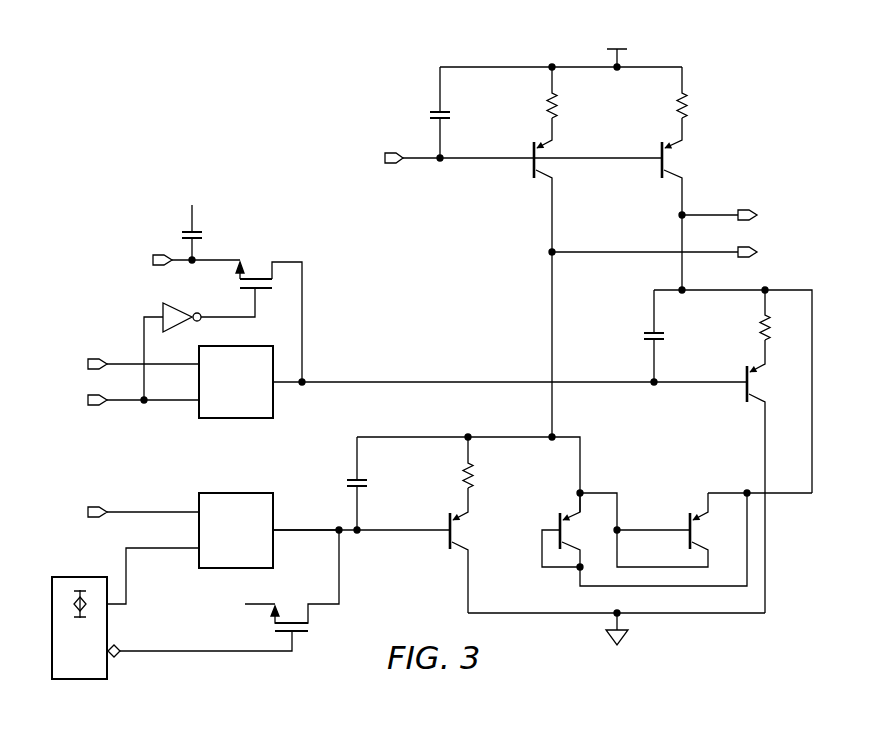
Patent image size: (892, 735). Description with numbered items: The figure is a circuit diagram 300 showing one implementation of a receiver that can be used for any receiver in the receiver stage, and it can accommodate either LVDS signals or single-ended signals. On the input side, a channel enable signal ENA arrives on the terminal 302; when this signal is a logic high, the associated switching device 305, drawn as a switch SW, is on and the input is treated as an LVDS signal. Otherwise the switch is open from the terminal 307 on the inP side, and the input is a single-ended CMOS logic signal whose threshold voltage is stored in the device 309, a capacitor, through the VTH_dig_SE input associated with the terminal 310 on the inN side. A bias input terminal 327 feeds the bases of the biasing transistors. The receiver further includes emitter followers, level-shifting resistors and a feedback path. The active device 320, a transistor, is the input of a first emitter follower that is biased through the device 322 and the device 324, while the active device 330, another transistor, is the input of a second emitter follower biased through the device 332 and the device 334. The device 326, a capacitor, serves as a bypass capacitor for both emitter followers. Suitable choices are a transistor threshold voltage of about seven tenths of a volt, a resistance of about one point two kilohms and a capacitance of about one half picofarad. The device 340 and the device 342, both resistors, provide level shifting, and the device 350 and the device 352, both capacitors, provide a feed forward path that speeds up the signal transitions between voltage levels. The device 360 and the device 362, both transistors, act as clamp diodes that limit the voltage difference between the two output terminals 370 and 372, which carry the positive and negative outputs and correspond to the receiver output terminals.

The circuit diagram 300 is at (222, 91).
The terminal 302 is at (128, 403).
The switching device 305 is at (235, 420).
The terminal 307 is at (126, 362).
The device 309 is at (163, 221).
The terminal 310 is at (136, 511).
The active device 320 is at (447, 538).
The device 322 is at (531, 168).
The device 324 is at (548, 100).
The device 326 is at (432, 114).
The bias input VBP 327 is at (422, 163).
The active device 330 is at (744, 388).
The device 332 is at (659, 168).
The device 334 is at (677, 100).
The device 340 is at (464, 472).
The device 342 is at (760, 322).
The device 350 is at (350, 484).
The device 352 is at (643, 336).
The device 360 is at (557, 522).
The device 362 is at (688, 522).
The output terminal 370 is at (718, 213).
The output terminal 372 is at (617, 251).